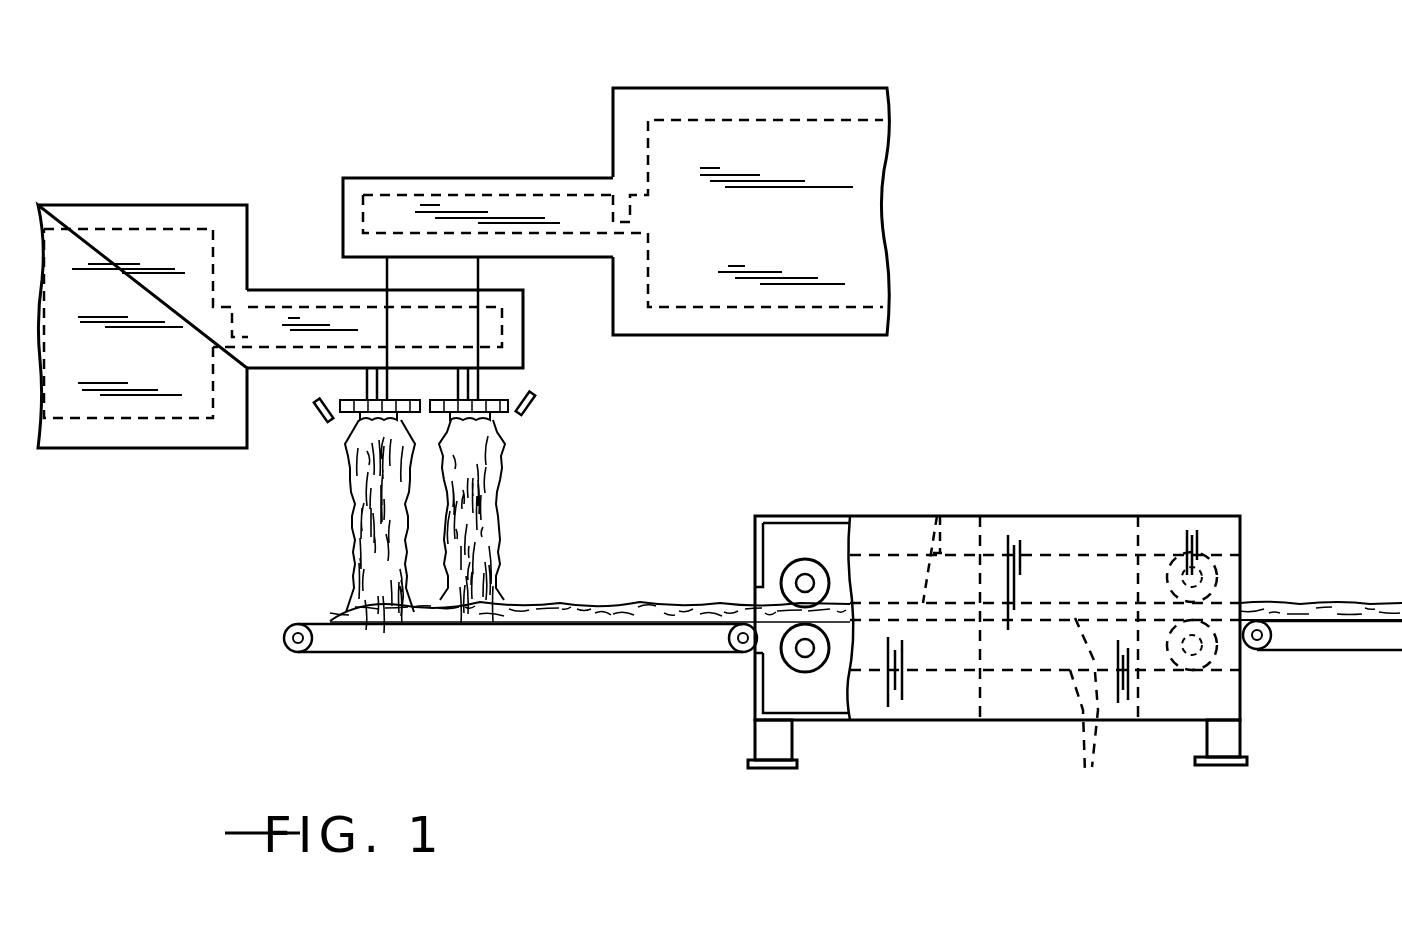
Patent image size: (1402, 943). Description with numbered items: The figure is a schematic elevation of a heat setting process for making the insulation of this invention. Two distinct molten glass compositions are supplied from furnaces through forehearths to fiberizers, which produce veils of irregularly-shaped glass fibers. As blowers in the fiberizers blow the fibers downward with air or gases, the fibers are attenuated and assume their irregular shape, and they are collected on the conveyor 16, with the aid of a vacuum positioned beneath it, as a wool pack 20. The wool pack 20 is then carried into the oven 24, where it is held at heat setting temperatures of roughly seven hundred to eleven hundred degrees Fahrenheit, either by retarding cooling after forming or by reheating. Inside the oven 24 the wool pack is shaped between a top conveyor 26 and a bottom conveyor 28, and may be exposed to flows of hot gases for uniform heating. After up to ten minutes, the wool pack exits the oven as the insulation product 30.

The conveyor 16 is at (320, 608).
The wool pack 20 is at (600, 600).
The oven 24 is at (1044, 514).
The top conveyor 26 is at (937, 516).
The bottom conveyor 28 is at (1084, 719).
The insulation product 30 is at (1300, 600).